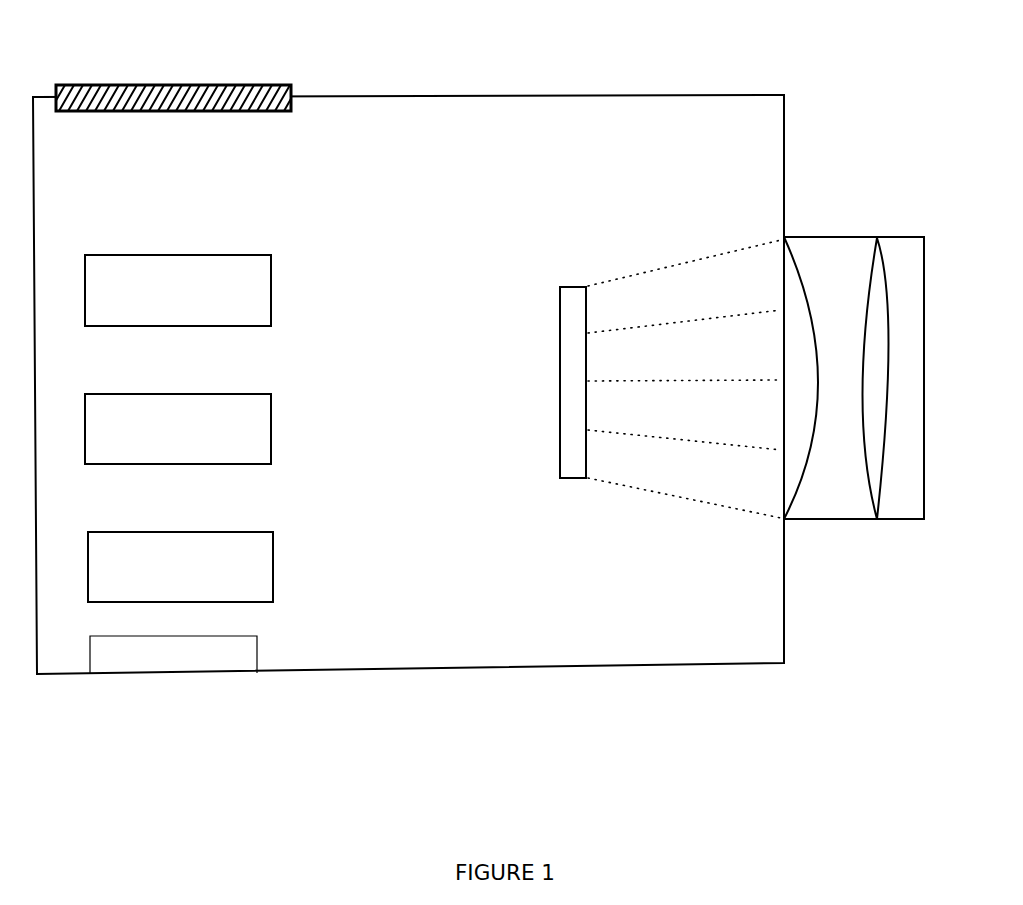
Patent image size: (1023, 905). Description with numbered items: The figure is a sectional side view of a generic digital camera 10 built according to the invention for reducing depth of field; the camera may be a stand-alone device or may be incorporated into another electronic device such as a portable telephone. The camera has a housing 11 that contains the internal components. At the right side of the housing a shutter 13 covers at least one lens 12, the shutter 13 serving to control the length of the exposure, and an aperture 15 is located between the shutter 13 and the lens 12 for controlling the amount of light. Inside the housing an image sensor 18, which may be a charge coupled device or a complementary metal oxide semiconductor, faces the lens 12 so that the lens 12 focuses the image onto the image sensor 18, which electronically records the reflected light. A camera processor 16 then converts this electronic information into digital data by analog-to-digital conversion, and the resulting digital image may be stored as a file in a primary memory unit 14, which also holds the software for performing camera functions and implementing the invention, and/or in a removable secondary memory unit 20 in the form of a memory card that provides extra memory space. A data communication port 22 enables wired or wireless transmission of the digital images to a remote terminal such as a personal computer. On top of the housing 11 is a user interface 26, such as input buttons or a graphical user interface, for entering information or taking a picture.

The digital camera 10 is at (683, 50).
The housing 11 is at (485, 96).
The lens 12 is at (791, 263).
The shutter 13 is at (924, 457).
The primary memory unit 14 is at (272, 288).
The aperture 15 is at (886, 305).
The camera processor 16 is at (272, 426).
The image sensor 18 is at (560, 306).
The secondary memory unit 20 is at (273, 567).
The data communication port 22 is at (258, 649).
The user interface 26 is at (150, 84).